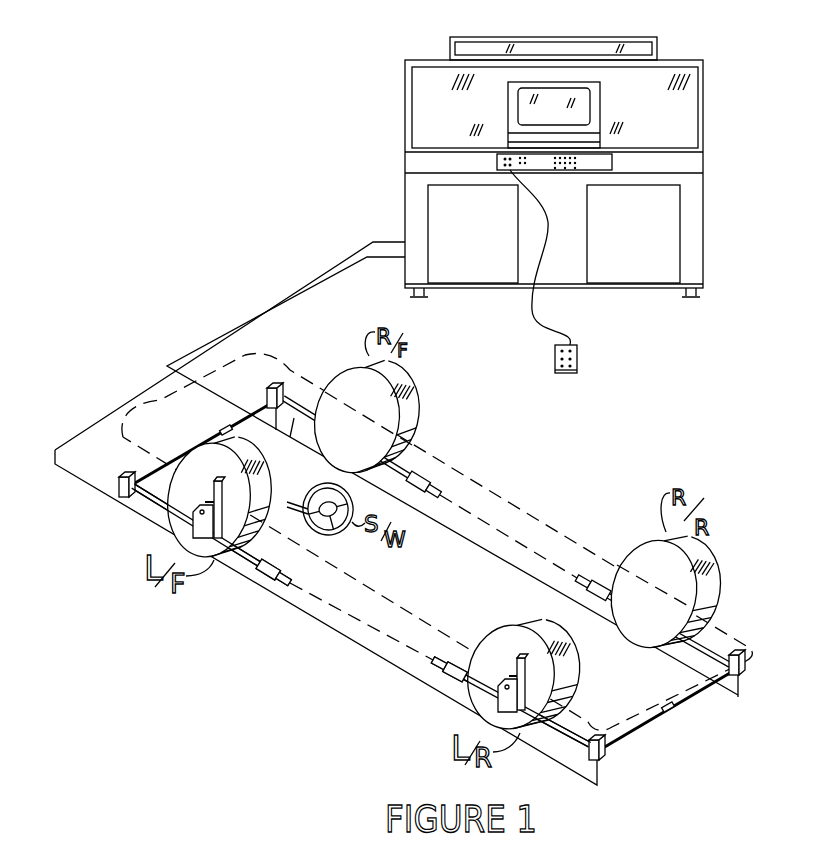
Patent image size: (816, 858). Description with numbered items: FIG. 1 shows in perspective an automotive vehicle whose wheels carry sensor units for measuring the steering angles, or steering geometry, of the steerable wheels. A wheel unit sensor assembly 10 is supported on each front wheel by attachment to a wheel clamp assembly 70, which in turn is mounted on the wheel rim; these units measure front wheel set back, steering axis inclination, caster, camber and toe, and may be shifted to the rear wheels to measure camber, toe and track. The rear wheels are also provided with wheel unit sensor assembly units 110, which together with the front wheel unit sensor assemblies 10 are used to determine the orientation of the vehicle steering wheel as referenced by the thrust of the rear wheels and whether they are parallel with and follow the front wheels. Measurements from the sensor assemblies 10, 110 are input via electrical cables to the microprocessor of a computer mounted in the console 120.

The wheel unit sensor assembly 10 is at (299, 416).
The wheel clamp assembly 70 is at (263, 484).
The wheel unit sensor assembly unit 110 is at (607, 756).
The console 120 is at (713, 103).